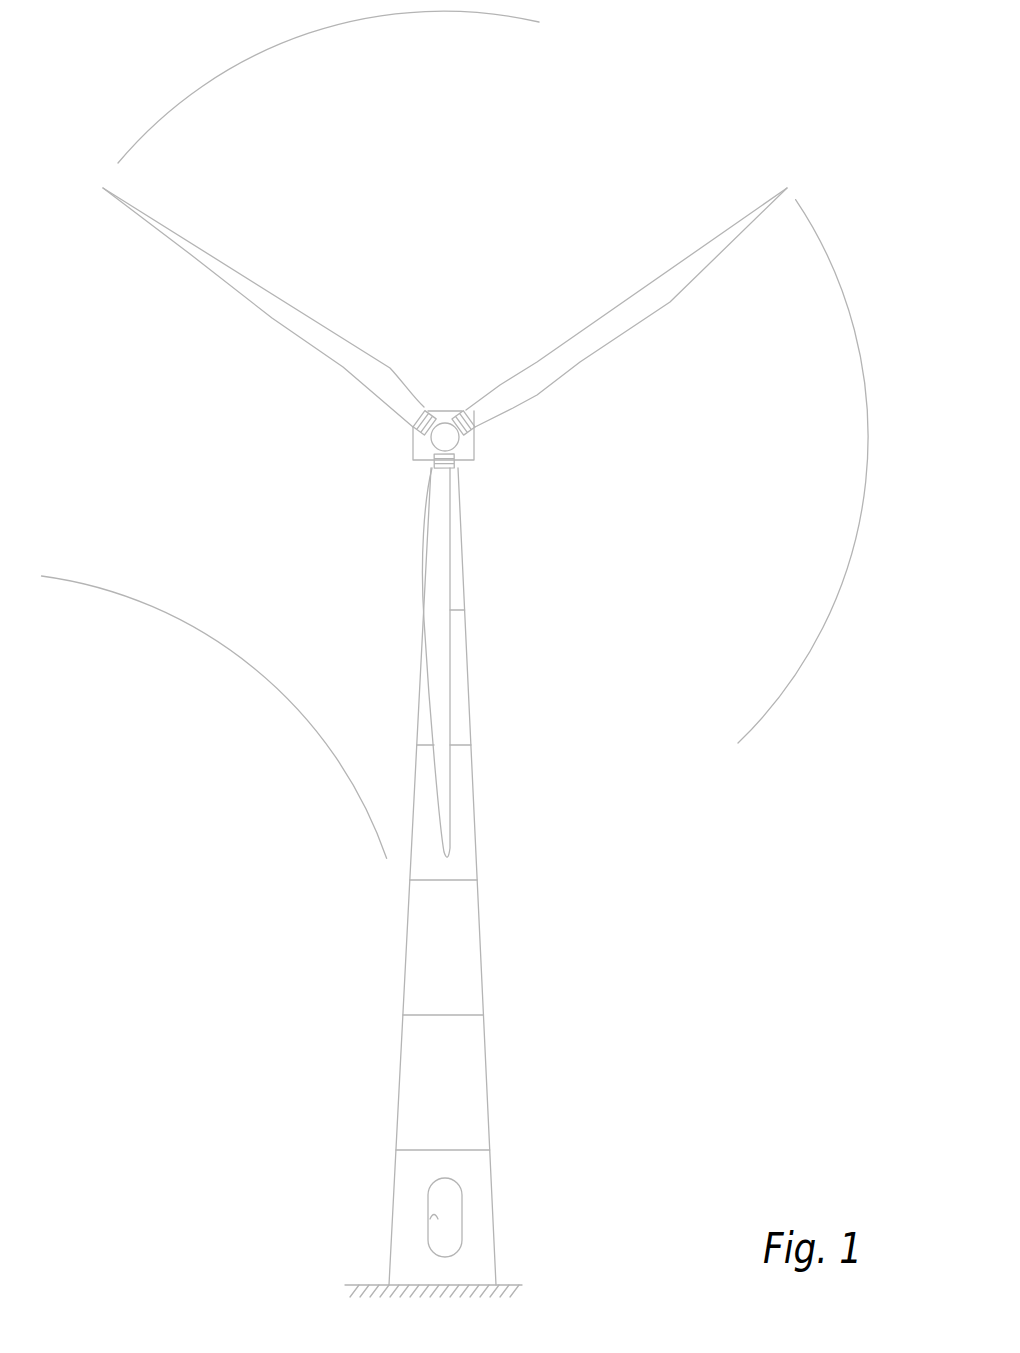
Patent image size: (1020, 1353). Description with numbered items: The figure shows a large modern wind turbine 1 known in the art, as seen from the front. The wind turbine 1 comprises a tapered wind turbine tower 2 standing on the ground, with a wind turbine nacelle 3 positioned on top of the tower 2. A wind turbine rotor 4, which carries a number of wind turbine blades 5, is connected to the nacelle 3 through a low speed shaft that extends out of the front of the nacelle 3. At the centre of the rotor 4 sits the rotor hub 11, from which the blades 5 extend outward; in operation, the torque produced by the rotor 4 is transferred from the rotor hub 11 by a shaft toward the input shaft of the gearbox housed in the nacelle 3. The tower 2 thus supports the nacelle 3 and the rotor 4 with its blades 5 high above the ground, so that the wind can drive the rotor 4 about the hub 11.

The wind turbine 1 is at (455, 654).
The wind turbine tower 2 is at (475, 960).
The wind turbine nacelle 3 is at (474, 460).
The wind turbine rotor 4 is at (432, 436).
The wind turbine blade 5 is at (447, 703).
The rotor hub 11 is at (450, 437).